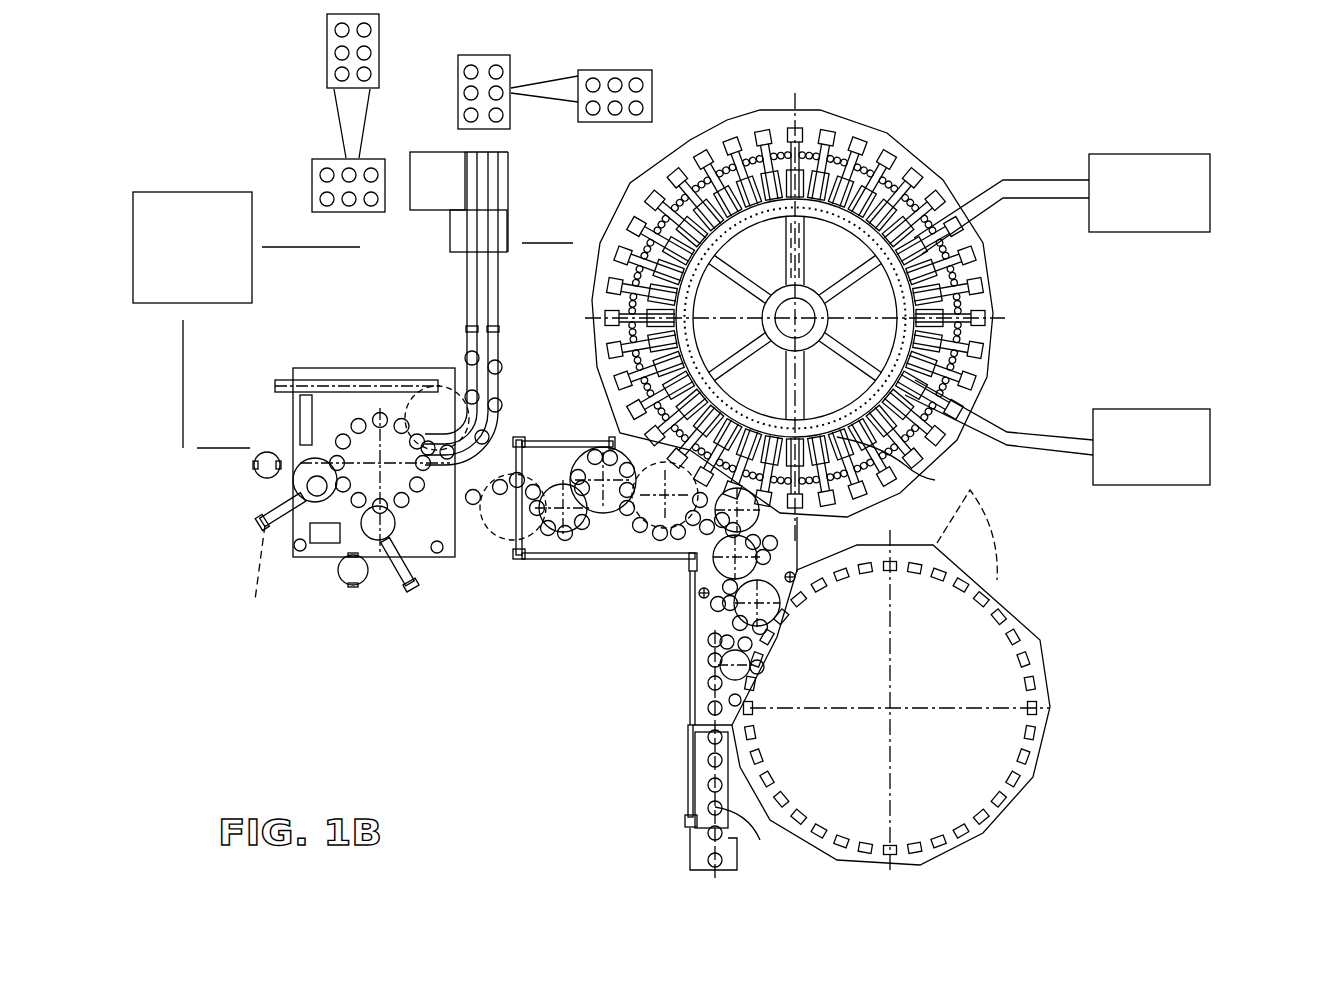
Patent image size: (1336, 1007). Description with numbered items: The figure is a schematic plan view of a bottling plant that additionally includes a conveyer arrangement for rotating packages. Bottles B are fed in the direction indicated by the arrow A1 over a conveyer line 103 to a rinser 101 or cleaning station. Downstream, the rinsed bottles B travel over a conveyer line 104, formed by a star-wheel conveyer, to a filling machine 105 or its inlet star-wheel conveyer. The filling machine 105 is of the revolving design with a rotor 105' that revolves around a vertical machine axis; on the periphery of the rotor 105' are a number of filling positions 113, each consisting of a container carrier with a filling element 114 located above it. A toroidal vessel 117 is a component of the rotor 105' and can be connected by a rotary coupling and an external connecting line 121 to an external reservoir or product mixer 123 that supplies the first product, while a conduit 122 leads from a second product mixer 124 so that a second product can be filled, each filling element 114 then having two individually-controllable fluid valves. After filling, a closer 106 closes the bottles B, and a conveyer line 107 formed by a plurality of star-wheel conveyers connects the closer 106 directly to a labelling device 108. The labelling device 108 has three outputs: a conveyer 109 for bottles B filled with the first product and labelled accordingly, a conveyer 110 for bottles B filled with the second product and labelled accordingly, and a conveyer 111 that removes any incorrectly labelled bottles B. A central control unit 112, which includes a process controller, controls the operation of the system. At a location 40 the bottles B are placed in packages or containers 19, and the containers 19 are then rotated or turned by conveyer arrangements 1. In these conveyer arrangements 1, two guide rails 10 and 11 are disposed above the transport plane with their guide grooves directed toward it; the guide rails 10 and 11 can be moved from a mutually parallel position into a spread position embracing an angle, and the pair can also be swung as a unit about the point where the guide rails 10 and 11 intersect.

The conveyer arrangement 1 is at (275, 84).
The guide rail 10 is at (370, 122).
The guide rail 11 is at (333, 122).
The package or container 19 is at (380, 42).
The location for placing bottles in packages 40 is at (437, 212).
The rinser 101 is at (1078, 592).
The conveyer line 103 is at (728, 793).
The conveyer line 104 is at (702, 628).
The filling machine 105 is at (860, 318).
The rotor 105' is at (792, 299).
The closer 106 is at (580, 432).
The conveyer line 107 is at (528, 575).
The labelling device 108 is at (324, 606).
The conveyer 109 is at (497, 348).
The conveyer 110 is at (465, 292).
The conveyer 111 is at (330, 380).
The central control unit 112 is at (353, 320).
The filling position 113 is at (985, 246).
The filling element 114 is at (980, 347).
The toroidal vessel 117 is at (935, 480).
The connecting line 121 is at (1028, 178).
The conduit 122 is at (1040, 430).
The product mixer 123 is at (1210, 195).
The product mixer 124 is at (1210, 455).
The direction of bottle feed A1 is at (670, 790).
The bottle B is at (739, 838).